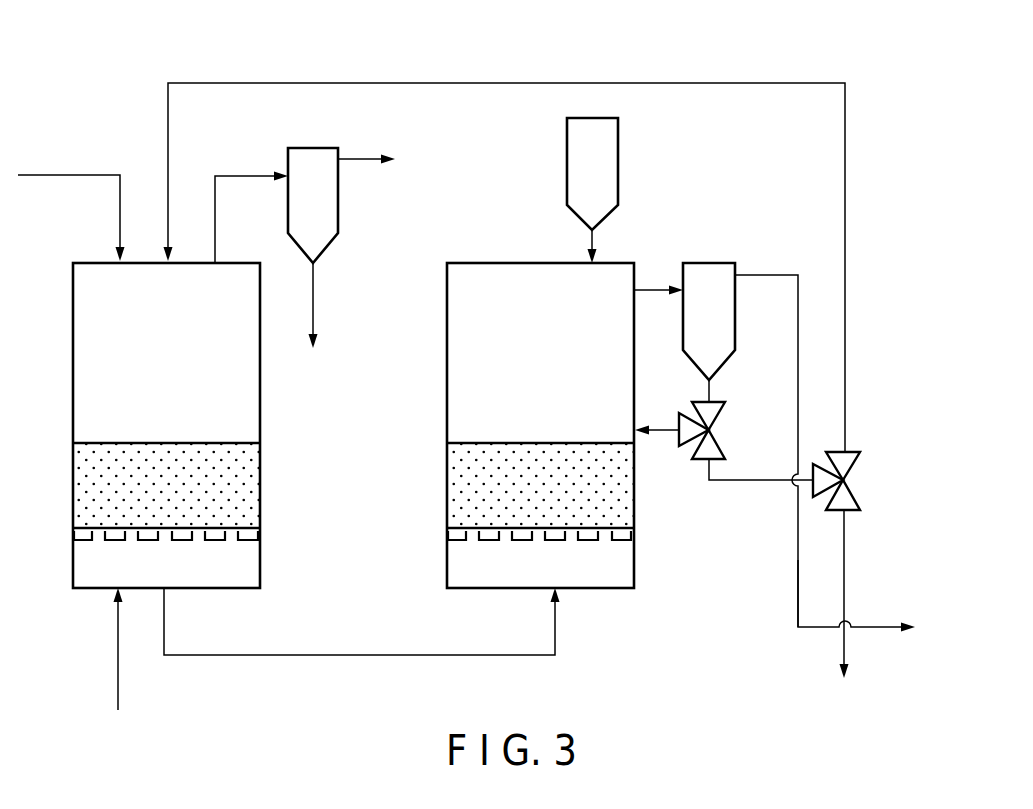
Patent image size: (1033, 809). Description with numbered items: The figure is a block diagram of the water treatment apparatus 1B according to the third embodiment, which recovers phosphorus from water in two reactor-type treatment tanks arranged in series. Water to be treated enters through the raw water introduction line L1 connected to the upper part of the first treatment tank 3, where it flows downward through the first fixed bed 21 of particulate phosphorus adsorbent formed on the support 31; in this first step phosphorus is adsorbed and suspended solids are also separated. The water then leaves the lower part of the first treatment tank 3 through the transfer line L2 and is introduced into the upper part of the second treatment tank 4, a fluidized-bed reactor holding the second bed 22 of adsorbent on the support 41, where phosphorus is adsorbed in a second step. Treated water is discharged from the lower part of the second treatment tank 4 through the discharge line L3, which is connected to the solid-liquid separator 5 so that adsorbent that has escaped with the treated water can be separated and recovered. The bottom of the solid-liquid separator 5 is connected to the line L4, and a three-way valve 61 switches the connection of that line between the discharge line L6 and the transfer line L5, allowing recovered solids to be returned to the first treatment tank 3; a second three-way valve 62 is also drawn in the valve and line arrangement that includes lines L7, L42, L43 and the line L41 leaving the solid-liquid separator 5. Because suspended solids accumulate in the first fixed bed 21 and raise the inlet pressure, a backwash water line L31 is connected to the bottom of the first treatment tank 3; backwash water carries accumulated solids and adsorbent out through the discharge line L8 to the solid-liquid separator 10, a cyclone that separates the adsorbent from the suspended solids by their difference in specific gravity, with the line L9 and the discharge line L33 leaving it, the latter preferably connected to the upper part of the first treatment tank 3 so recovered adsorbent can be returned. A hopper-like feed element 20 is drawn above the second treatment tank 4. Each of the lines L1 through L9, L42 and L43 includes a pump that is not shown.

The water treatment apparatus 1B is at (418, 24).
The first treatment tank 3 is at (73, 320).
The second treatment tank 4 is at (447, 320).
The solid-liquid separator 5 is at (720, 262).
The solid-liquid separator 10 is at (338, 204).
The raw material hopper 20 is at (618, 155).
The first fixed bed 21 is at (82, 500).
The second bed 22 is at (455, 500).
The support 31 is at (113, 542).
The support 41 is at (488, 542).
The three-way valve 61 is at (725, 438).
The three-way valve 62 is at (860, 490).
The raw water introduction line L1 is at (60, 175).
The transfer line L2 is at (355, 655).
The discharge line L3 is at (655, 290).
The line L4 is at (825, 453).
The transfer line L5 is at (846, 172).
The discharge line L6 is at (844, 568).
The line L7 is at (797, 593).
The discharge line L8 is at (245, 175).
The line L9 is at (360, 159).
The backwash water line L31 is at (118, 690).
The discharge line L33 is at (313, 288).
The solids return line L41 is at (709, 390).
The line L42 is at (738, 482).
The line L43 is at (662, 432).